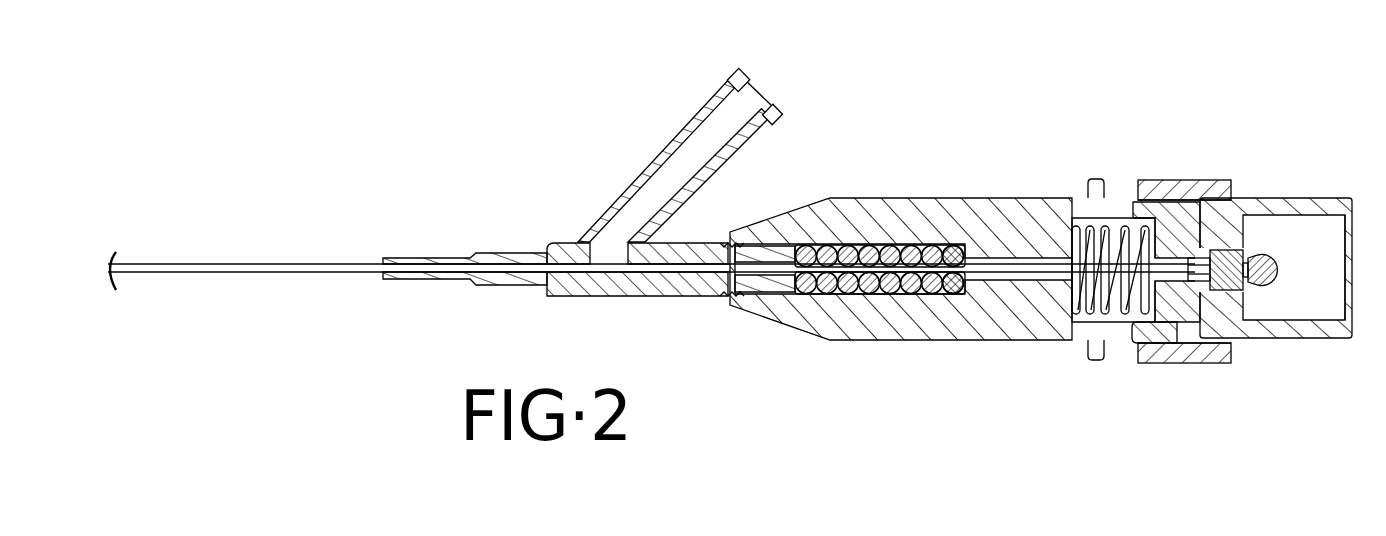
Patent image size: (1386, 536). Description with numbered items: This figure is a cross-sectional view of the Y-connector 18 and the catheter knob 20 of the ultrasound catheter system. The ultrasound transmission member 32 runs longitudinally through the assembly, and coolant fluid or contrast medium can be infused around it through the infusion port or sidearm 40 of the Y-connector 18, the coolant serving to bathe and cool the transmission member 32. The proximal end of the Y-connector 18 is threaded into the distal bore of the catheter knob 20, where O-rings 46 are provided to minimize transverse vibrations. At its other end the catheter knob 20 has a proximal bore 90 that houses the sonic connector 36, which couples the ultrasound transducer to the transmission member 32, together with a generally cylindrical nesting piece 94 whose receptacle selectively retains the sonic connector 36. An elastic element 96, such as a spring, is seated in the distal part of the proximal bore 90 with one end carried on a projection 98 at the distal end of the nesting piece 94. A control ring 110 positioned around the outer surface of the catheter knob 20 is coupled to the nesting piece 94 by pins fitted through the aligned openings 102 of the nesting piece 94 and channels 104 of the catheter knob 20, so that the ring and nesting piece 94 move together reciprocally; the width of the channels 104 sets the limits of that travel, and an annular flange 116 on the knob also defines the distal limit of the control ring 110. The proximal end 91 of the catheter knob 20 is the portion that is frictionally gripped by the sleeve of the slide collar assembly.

The Y-connector 18 is at (618, 298).
The catheter knob 20 is at (866, 199).
The ultrasound transmission member 32 is at (1000, 268).
The sonic connector 36 is at (1232, 250).
The infusion port or sidearm 40 is at (662, 158).
The O-rings 46 is at (832, 296).
The proximal bore 90 is at (1306, 224).
The proximal end 91 is at (1338, 338).
The nesting piece 94 is at (1247, 325).
The elastic element 96 is at (1115, 197).
The projection 98 is at (1188, 235).
The openings 102 is at (1210, 200).
The channels 104 is at (1150, 208).
The control ring 110 is at (1168, 360).
The annular flange 116 is at (1093, 181).